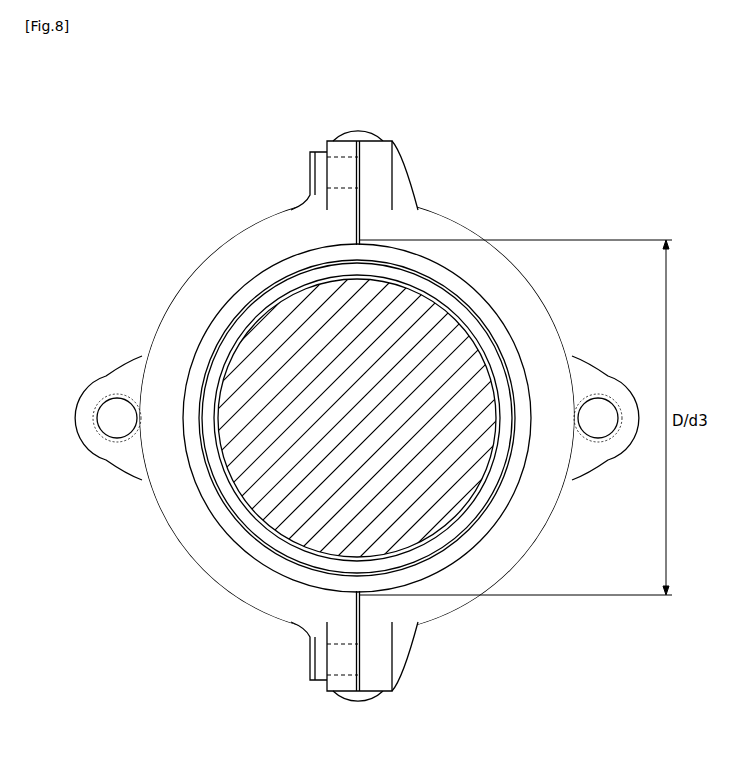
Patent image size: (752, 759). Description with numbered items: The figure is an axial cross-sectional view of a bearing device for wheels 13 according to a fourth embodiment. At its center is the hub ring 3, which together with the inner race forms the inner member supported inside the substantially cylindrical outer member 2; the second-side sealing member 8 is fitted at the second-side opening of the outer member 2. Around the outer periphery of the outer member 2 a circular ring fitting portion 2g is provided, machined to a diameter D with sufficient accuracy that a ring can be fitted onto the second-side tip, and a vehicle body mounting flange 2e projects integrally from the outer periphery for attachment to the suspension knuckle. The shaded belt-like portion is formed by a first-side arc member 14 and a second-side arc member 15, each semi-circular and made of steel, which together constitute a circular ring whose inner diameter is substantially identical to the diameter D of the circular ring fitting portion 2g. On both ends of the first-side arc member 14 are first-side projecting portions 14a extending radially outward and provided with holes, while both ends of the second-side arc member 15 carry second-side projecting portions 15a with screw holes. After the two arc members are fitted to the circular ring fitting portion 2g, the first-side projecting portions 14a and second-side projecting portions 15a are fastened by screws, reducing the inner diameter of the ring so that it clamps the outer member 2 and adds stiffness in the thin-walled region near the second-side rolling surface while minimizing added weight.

The bearing device for wheels 13 is at (319, 357).
The outer member 2 is at (267, 282).
The circular ring fitting portion 2g is at (293, 252).
The vehicle body mounting flange 2e is at (113, 375).
The hub ring 3 is at (250, 300).
The second-side sealing member 8 is at (235, 330).
The first-side arc member 14 is at (168, 330).
The first-side projecting portions 14a is at (338, 146).
The second-side arc member 15 is at (545, 312).
The second-side projecting portions 15a is at (378, 145).